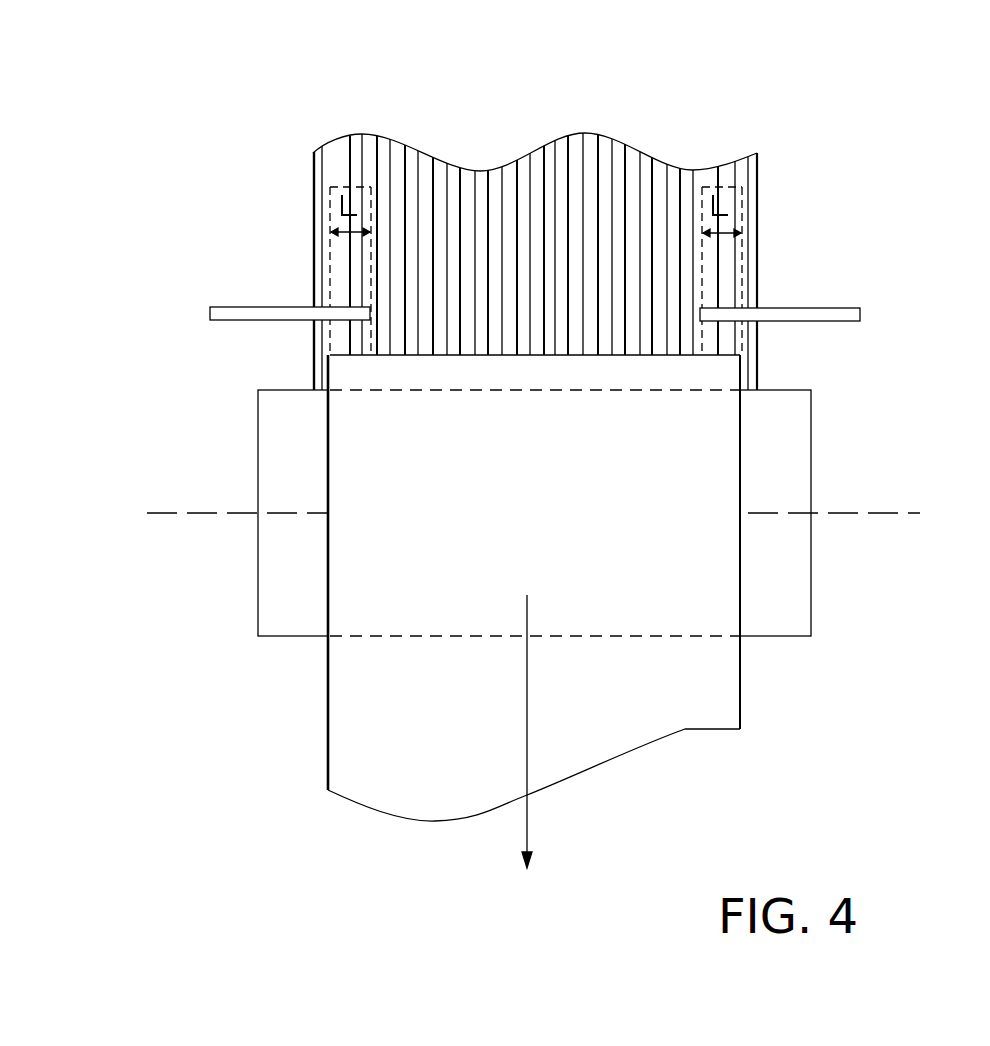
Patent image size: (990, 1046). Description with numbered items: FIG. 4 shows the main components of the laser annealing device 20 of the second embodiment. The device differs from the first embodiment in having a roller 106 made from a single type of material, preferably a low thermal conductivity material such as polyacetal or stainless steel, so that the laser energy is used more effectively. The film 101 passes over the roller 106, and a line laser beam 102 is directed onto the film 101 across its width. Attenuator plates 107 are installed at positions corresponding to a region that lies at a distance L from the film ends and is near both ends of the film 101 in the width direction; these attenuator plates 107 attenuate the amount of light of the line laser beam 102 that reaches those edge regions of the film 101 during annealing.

The laser annealing device 20 is at (797, 119).
The film 101 is at (327, 668).
The line laser beam 102 is at (403, 268).
The roller 106 is at (775, 440).
The attenuator plates 107 is at (250, 322).